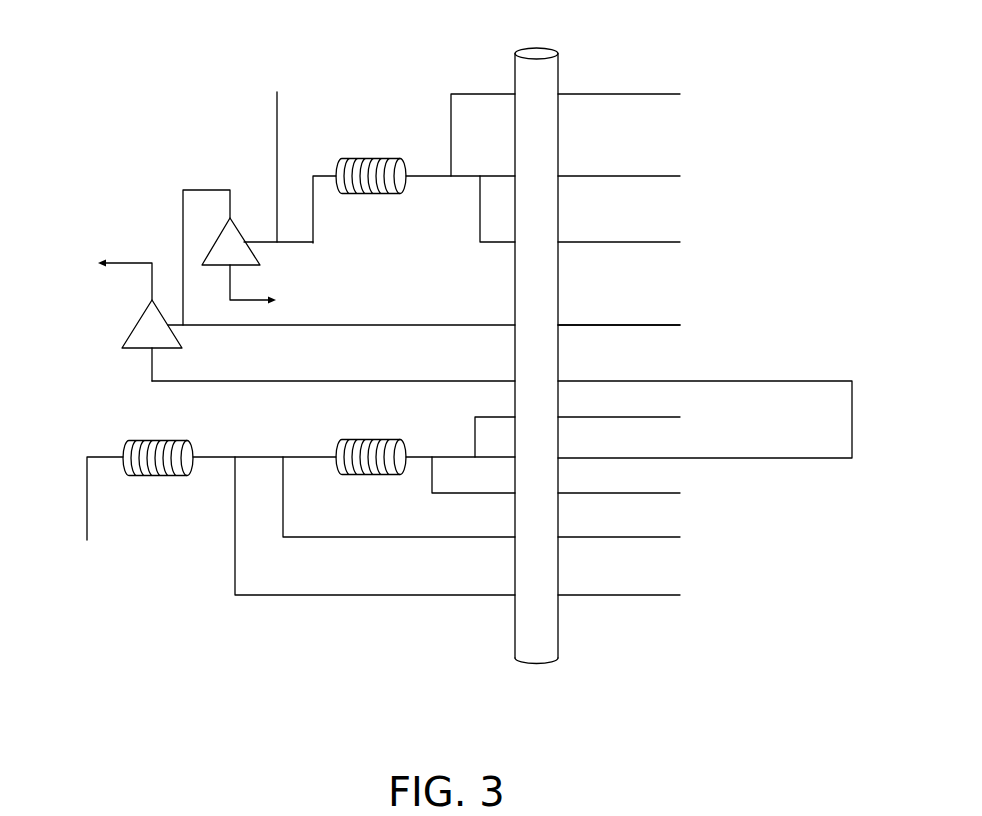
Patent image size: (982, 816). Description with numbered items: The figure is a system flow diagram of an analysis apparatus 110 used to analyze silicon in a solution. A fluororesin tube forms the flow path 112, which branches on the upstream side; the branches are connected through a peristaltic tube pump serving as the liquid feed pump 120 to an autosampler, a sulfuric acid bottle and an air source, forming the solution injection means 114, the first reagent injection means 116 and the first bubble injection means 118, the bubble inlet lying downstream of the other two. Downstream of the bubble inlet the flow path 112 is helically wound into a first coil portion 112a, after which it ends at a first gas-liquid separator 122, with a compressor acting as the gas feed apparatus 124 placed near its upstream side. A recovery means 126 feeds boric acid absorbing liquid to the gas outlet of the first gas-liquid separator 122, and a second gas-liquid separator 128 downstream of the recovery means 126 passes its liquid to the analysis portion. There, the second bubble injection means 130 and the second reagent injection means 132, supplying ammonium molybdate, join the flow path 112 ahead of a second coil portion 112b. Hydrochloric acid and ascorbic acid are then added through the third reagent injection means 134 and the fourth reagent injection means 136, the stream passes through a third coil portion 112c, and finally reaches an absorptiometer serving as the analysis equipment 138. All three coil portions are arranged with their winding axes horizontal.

The analysis apparatus 110 is at (148, 72).
The flow path 112 is at (422, 176).
The first coil portion 112a is at (366, 158).
The second coil portion 112b is at (368, 439).
The third coil portion 112c is at (160, 440).
The solution injection means 114 is at (660, 241).
The first reagent injection means 116 is at (660, 175).
The first bubble injection means 118 is at (660, 93).
The liquid feed pump 120 is at (548, 66).
The first gas-liquid separator 122 is at (246, 256).
The gas feed apparatus 124 is at (278, 108).
The recovery means 126 is at (660, 324).
The second gas-liquid separator 128 is at (147, 328).
The second bubble injection means 130 is at (660, 416).
The second reagent injection means 132 is at (660, 492).
The third reagent injection means 134 is at (660, 540).
The fourth reagent injection means 136 is at (660, 598).
The analysis equipment 138 is at (88, 515).